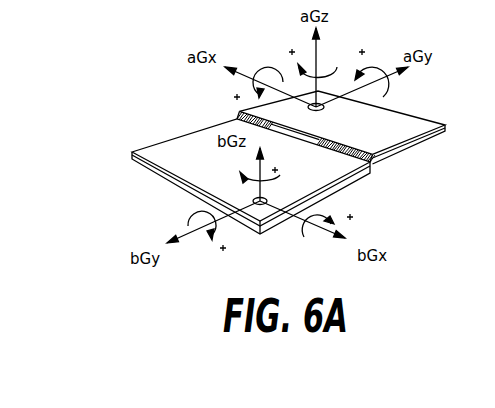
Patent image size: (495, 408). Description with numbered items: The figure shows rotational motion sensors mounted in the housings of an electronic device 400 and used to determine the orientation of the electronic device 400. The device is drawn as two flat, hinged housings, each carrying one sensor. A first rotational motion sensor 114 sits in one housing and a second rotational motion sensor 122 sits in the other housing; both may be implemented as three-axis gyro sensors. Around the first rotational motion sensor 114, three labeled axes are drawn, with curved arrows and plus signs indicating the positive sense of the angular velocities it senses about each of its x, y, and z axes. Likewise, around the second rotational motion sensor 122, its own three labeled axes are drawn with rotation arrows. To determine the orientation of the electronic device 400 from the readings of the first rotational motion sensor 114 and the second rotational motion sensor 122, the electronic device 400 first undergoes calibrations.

The electronic device 400 is at (170, 93).
The first rotational motion sensor 114 is at (324, 108).
The second rotational motion sensor 122 is at (253, 199).